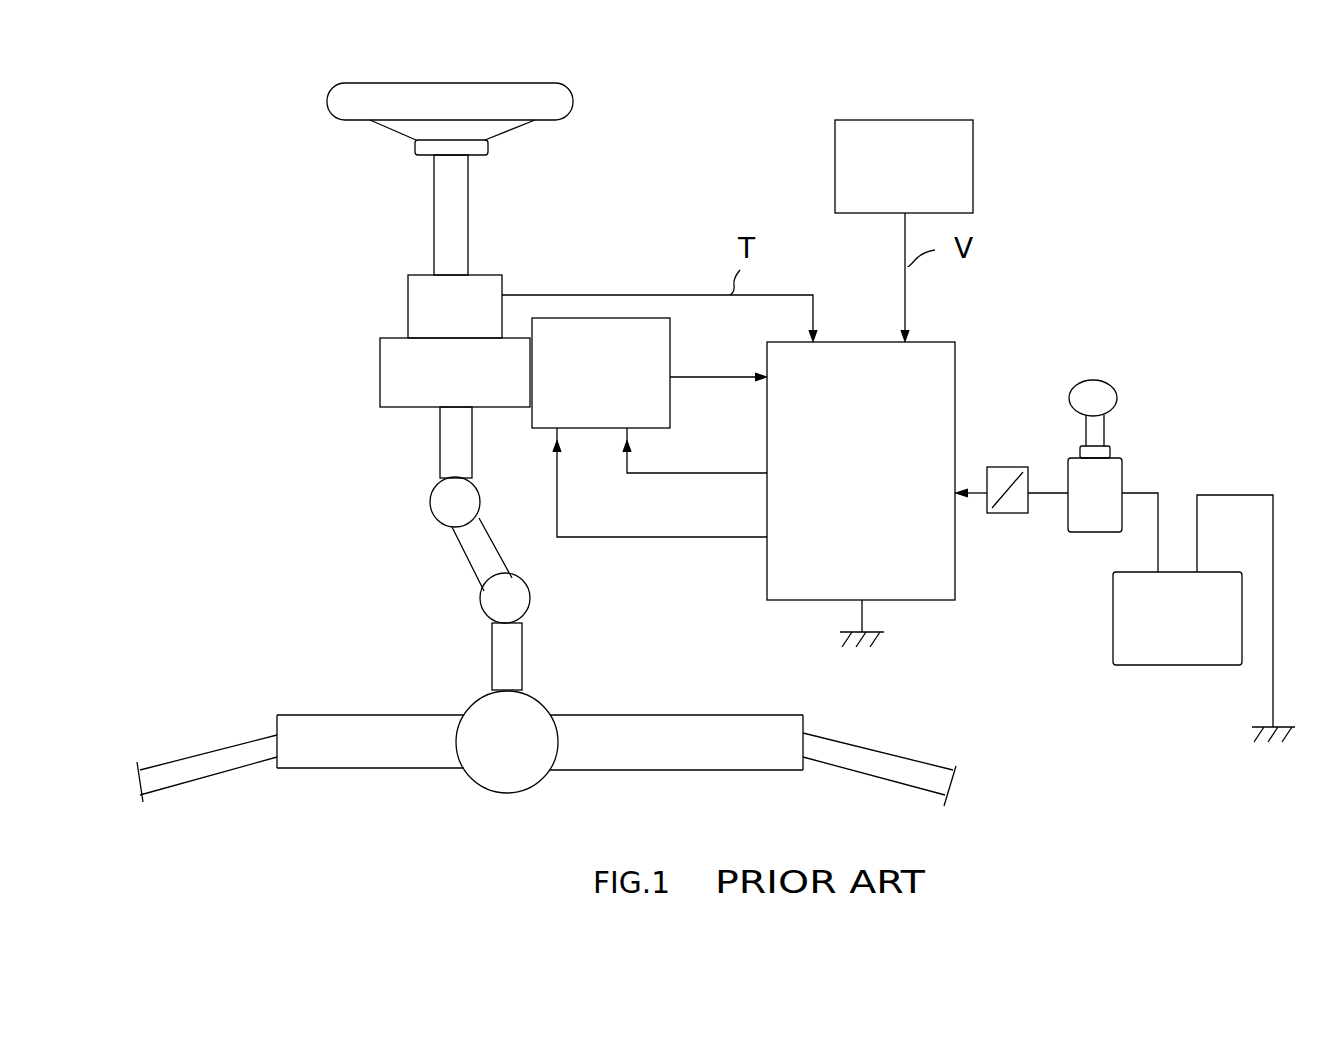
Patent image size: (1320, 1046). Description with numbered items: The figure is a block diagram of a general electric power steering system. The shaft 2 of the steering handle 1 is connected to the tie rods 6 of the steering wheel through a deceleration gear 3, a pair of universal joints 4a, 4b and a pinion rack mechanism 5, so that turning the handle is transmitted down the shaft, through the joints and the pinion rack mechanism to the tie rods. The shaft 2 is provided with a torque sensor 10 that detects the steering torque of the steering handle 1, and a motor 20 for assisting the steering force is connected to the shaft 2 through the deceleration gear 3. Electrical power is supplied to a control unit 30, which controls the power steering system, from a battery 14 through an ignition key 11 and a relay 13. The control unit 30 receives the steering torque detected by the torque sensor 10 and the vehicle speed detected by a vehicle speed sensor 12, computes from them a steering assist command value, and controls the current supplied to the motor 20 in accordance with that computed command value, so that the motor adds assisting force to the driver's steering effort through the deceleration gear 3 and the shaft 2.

The steering handle 1 is at (568, 100).
The shaft 2 is at (434, 215).
The deceleration gear 3 is at (380, 378).
The universal joint 4a is at (430, 502).
The universal joint 4b is at (480, 601).
The pinion rack mechanism 5 is at (553, 697).
The tie rods 6 is at (888, 757).
The torque sensor 10 is at (408, 300).
The ignition key 11 is at (1118, 392).
The vehicle speed sensor 12 is at (942, 120).
The relay 13 is at (1010, 513).
The battery 14 is at (1153, 657).
The motor 20 is at (635, 318).
The control unit 30 is at (942, 342).